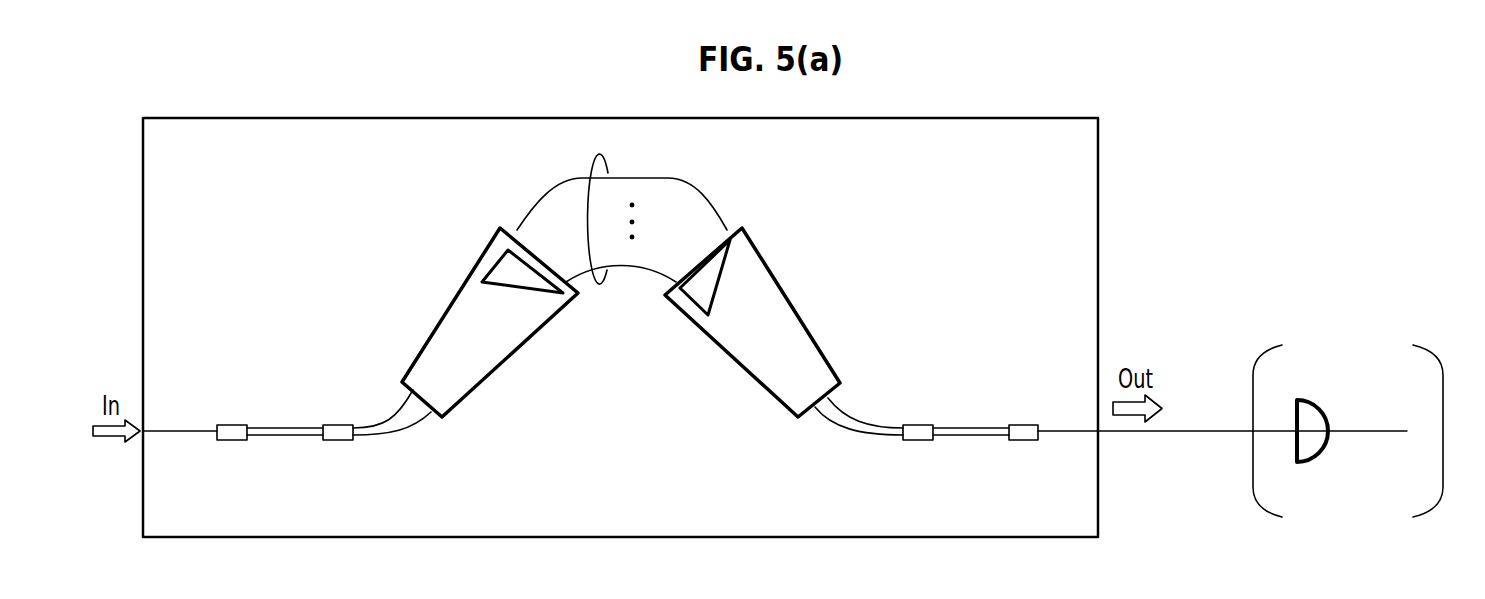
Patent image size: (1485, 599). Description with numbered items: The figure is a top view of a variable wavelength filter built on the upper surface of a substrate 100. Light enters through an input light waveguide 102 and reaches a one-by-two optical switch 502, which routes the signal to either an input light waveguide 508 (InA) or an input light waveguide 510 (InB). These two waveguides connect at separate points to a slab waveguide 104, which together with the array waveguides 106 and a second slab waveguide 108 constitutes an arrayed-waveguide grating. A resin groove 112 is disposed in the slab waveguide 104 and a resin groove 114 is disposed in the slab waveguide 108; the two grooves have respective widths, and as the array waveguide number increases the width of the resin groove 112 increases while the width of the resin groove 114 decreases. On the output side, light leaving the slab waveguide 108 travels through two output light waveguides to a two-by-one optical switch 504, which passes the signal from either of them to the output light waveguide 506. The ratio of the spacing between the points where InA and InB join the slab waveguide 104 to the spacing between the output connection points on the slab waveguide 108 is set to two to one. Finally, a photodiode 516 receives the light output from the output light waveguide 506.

The substrate 100 is at (283, 118).
The input light waveguide 102 is at (178, 428).
The slab waveguide 104 is at (497, 368).
The array waveguides 106 is at (598, 155).
The slab waveguide 108 is at (745, 372).
The resin groove 112 is at (497, 262).
The resin groove 114 is at (728, 257).
The optical switch 502 is at (353, 420).
The optical switch 504 is at (1038, 420).
The output light waveguide 506 is at (1062, 428).
The input light waveguide 508 is at (402, 432).
The input light waveguide 510 is at (380, 417).
The photodiode 516 is at (1372, 430).